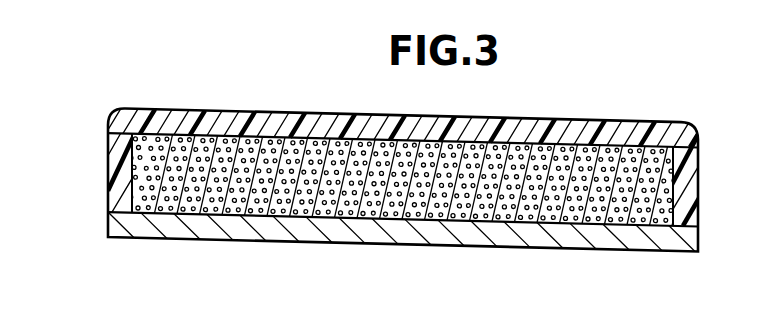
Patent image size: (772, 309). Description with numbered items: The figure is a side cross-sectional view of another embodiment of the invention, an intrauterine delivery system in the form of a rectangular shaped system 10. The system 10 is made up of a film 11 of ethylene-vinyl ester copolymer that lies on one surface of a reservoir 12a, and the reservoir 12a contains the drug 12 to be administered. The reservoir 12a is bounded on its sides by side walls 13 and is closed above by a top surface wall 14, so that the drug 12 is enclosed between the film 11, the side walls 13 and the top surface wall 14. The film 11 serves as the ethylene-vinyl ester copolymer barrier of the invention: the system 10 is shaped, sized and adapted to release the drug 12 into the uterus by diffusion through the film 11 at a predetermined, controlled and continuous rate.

The rectangular shaped system 10 is at (397, 243).
The film 11 is at (352, 232).
The drug 12 is at (315, 211).
The reservoir 12a is at (232, 207).
The side walls 13 is at (120, 152).
The top surface wall 14 is at (390, 124).